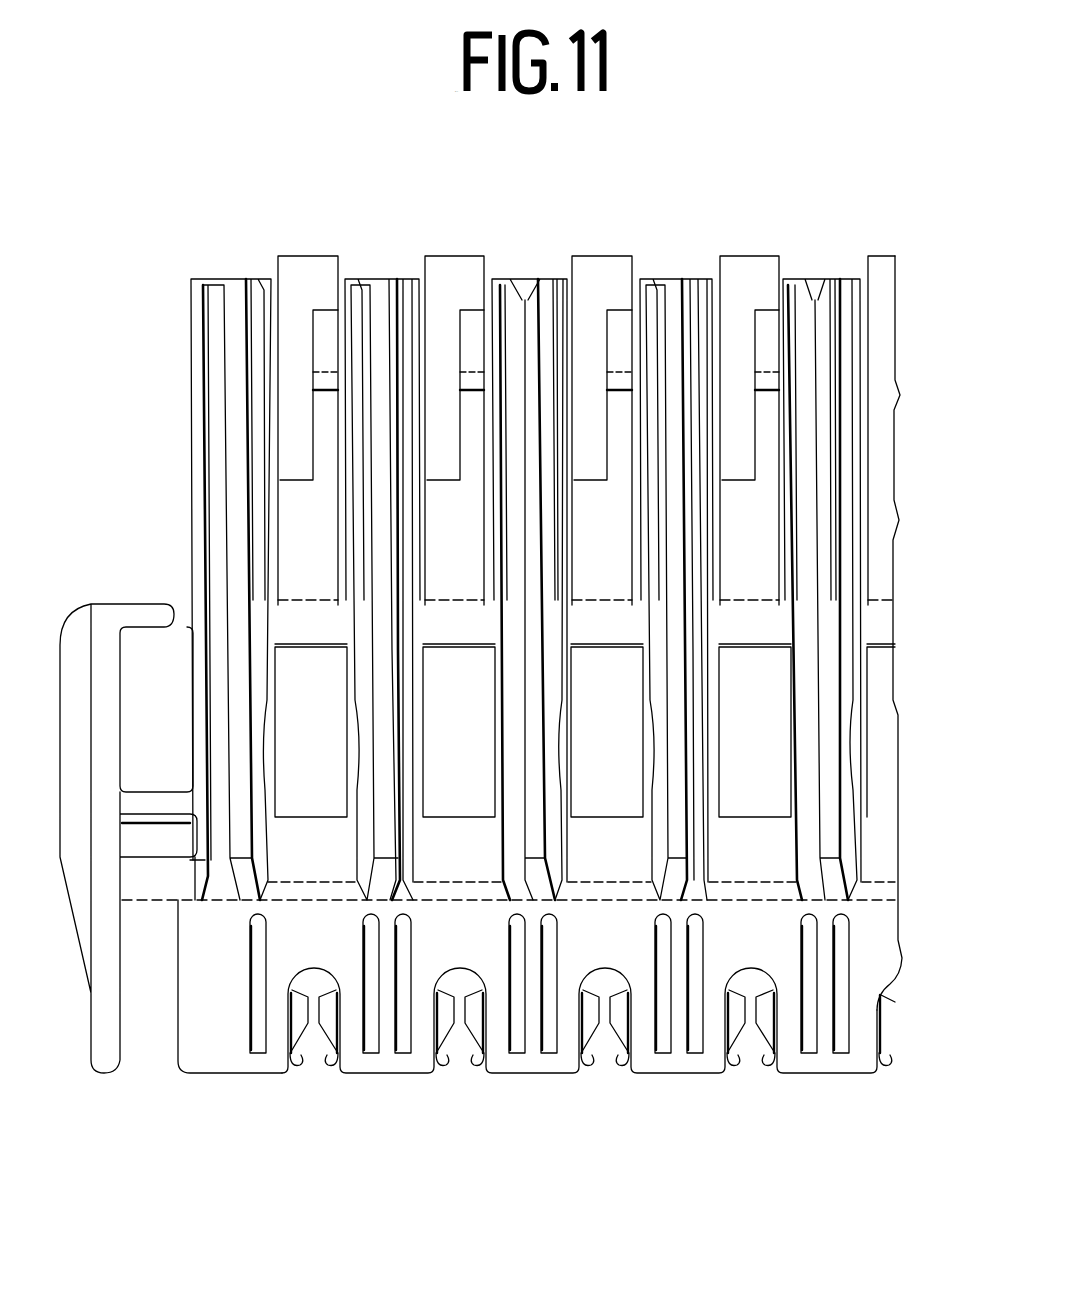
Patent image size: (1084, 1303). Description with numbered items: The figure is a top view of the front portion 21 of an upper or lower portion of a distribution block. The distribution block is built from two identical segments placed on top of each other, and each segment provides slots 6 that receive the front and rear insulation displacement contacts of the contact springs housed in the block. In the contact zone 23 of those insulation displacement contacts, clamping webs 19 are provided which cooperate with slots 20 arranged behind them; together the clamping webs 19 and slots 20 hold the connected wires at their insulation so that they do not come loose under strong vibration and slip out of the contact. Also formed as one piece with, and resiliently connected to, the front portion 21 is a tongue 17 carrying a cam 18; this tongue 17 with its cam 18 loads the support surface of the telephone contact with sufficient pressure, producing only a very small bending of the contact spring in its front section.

The slot 6 is at (461, 1060).
The tongue 17 is at (305, 500).
The cam 18 is at (318, 388).
The clamping web 19 is at (330, 1030).
The slot 20 is at (257, 1048).
The front portion 21 is at (740, 218).
The contact zone 23 is at (266, 1100).